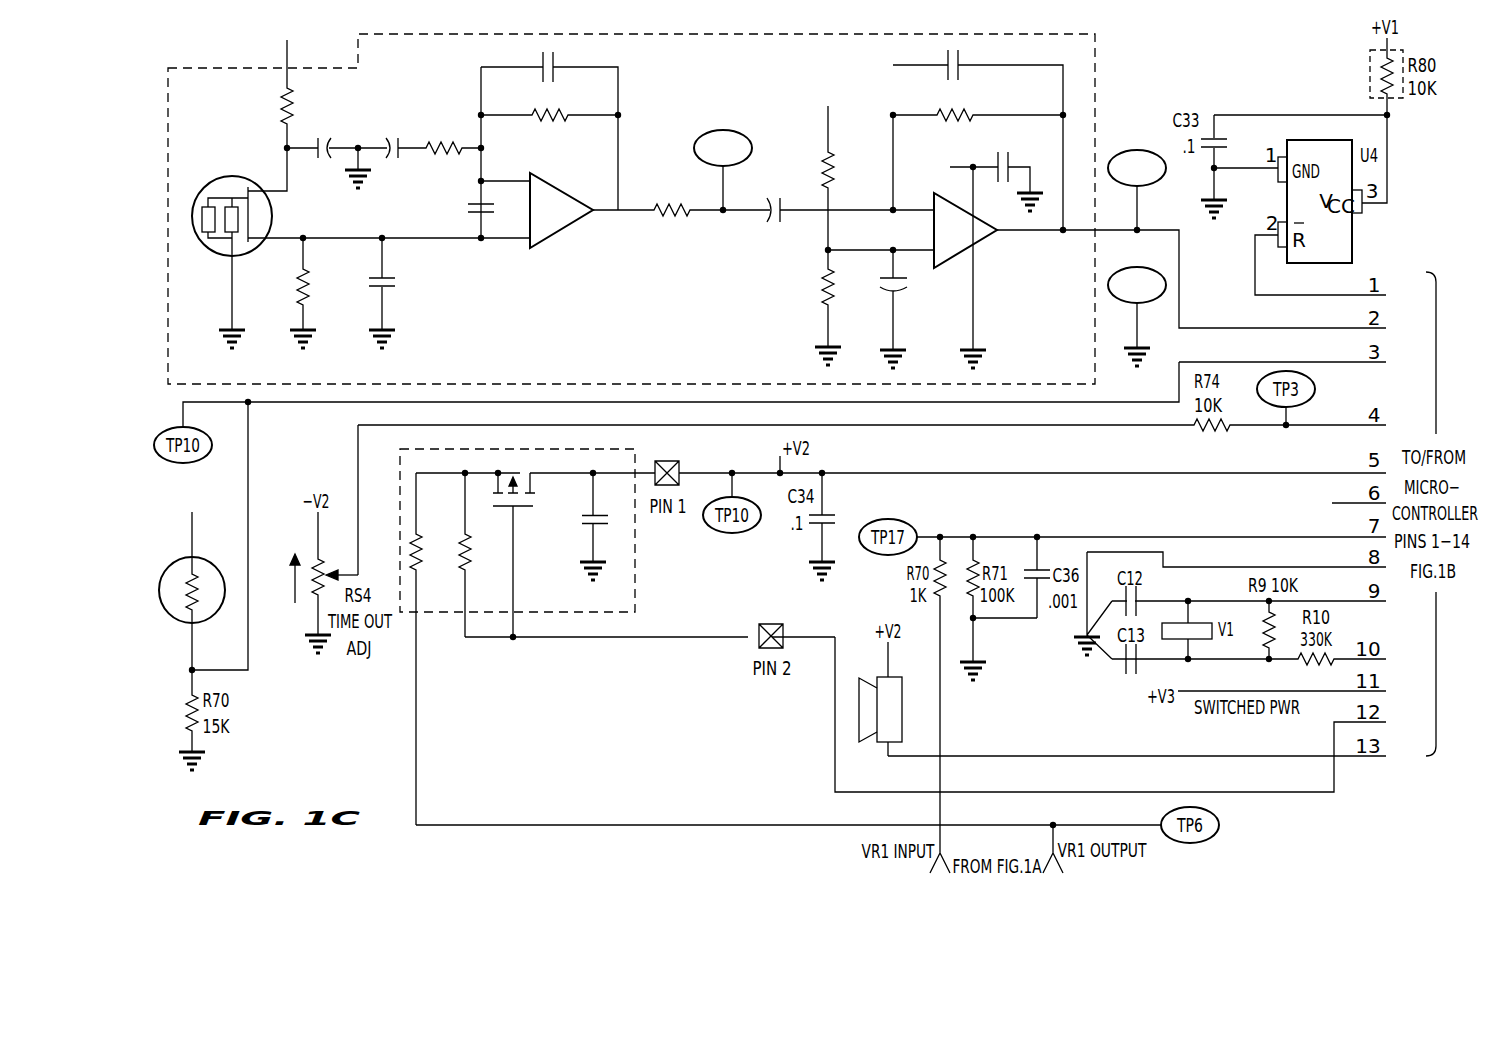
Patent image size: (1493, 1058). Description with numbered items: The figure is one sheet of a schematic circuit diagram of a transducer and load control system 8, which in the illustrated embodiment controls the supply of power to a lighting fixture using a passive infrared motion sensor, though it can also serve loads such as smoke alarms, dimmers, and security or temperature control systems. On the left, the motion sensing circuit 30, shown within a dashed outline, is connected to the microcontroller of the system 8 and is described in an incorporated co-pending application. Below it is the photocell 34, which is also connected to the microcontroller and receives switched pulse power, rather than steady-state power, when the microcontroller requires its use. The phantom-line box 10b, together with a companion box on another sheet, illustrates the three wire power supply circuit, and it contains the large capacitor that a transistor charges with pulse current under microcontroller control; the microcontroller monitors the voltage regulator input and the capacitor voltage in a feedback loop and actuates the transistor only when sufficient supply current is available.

The transducer and load control system 8 is at (1150, 85).
The motion sensing circuit 30 is at (606, 309).
The photocell 34 is at (210, 562).
The box 10b is at (636, 586).